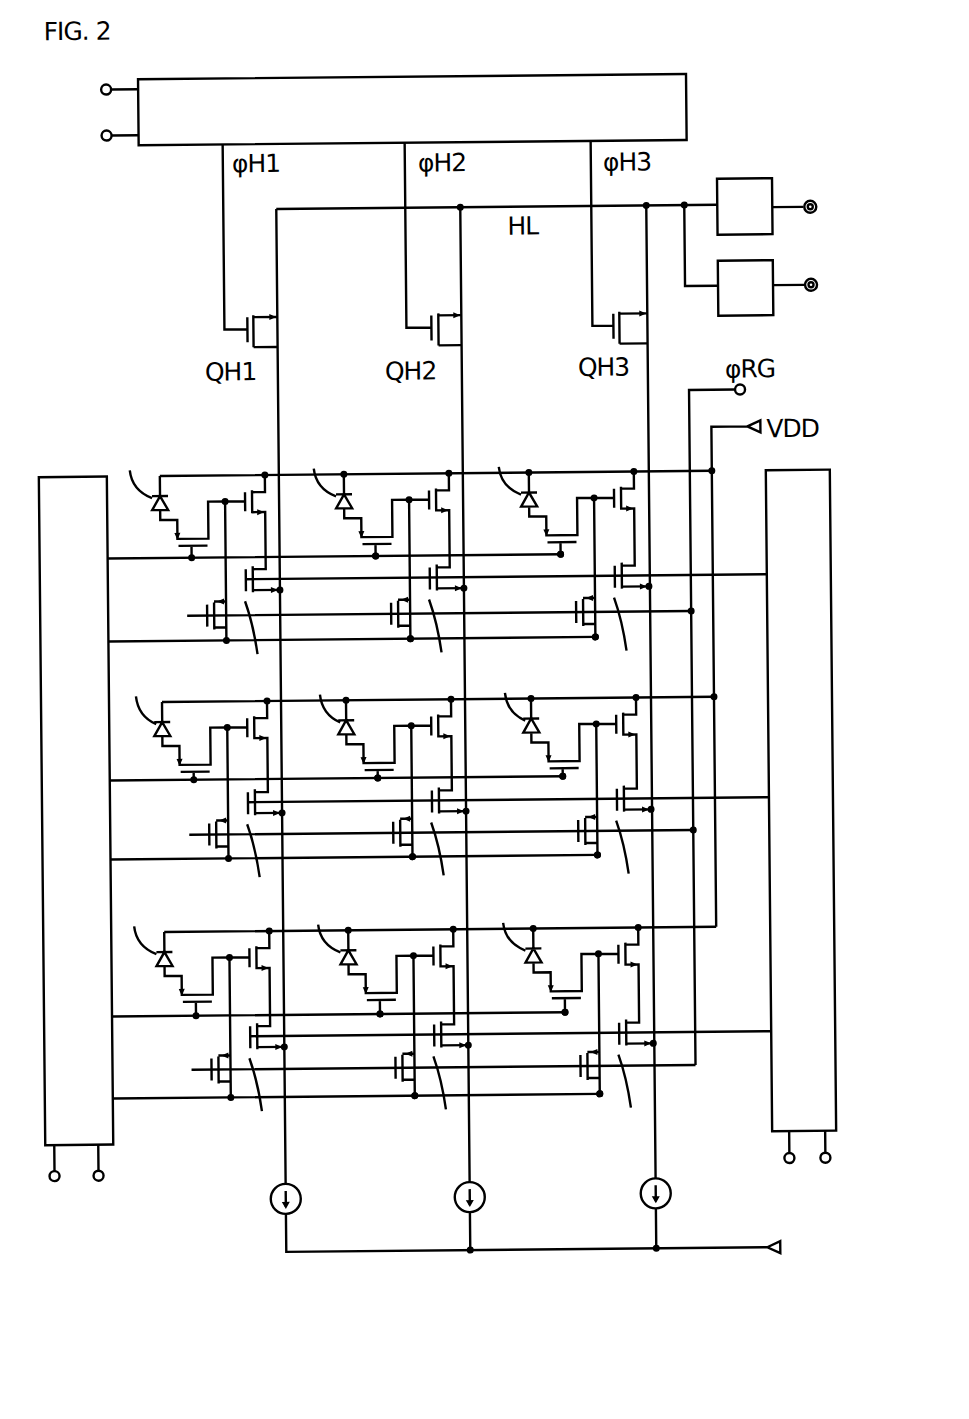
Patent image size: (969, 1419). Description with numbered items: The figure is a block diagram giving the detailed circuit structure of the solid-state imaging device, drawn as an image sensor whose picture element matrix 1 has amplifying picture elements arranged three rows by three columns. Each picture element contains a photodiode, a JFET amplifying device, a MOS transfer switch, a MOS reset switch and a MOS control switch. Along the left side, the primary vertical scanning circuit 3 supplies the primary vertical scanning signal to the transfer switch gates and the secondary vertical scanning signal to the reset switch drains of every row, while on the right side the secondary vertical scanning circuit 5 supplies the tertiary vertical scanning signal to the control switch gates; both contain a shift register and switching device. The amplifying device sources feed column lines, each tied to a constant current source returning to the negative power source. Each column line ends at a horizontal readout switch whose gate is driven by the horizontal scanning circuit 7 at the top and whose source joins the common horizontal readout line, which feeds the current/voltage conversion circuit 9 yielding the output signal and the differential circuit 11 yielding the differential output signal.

The picture element matrix 1 is at (357, 1138).
The primary vertical scanning circuit 3 is at (76, 473).
The secondary vertical scanning circuit 5 is at (768, 1092).
The horizontal scanning circuit 7 is at (692, 94).
The current/voltage conversion circuit 9 is at (748, 181).
The differential circuit 11 is at (722, 314).